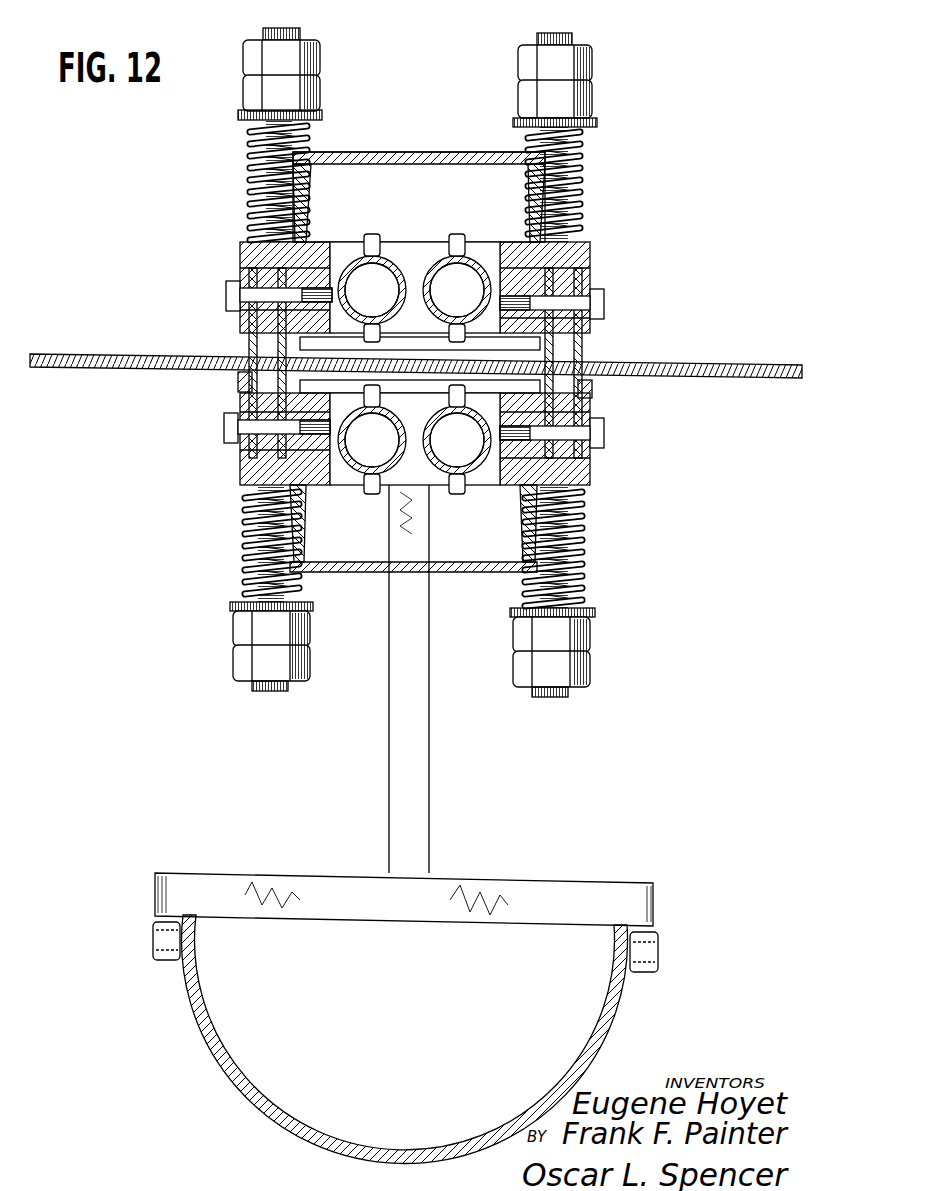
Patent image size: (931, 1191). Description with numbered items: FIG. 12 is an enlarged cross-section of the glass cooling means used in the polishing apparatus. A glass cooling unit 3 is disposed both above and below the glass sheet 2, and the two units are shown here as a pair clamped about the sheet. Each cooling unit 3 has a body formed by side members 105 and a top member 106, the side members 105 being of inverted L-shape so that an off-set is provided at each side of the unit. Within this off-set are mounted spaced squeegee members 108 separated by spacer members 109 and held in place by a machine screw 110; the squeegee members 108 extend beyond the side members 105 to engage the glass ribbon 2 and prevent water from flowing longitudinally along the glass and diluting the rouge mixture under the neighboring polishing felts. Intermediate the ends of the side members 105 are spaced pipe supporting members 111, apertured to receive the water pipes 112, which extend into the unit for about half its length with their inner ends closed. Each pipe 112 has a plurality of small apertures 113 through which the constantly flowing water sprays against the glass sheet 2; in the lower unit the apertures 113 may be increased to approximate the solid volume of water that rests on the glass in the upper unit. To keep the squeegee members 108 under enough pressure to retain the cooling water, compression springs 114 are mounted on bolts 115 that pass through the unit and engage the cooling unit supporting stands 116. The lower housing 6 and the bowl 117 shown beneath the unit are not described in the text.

The glass sheet 2 is at (55, 354).
The glass cooling unit 3 is at (335, 140).
The lower housing 6 is at (375, 562).
The side member 105 is at (240, 470).
The top member 106 is at (432, 152).
The squeegee member 108 is at (265, 395).
The spacer member 109 is at (280, 345).
The machine screw 110 is at (228, 295).
The pipe supporting member 111 is at (483, 245).
The water pipe 112 is at (432, 262).
The aperture 113 is at (435, 317).
The compression spring 114 is at (583, 165).
The bolt 115 is at (572, 38).
The cooling unit supporting stand 116 is at (429, 772).
The bowl 117 is at (548, 1070).